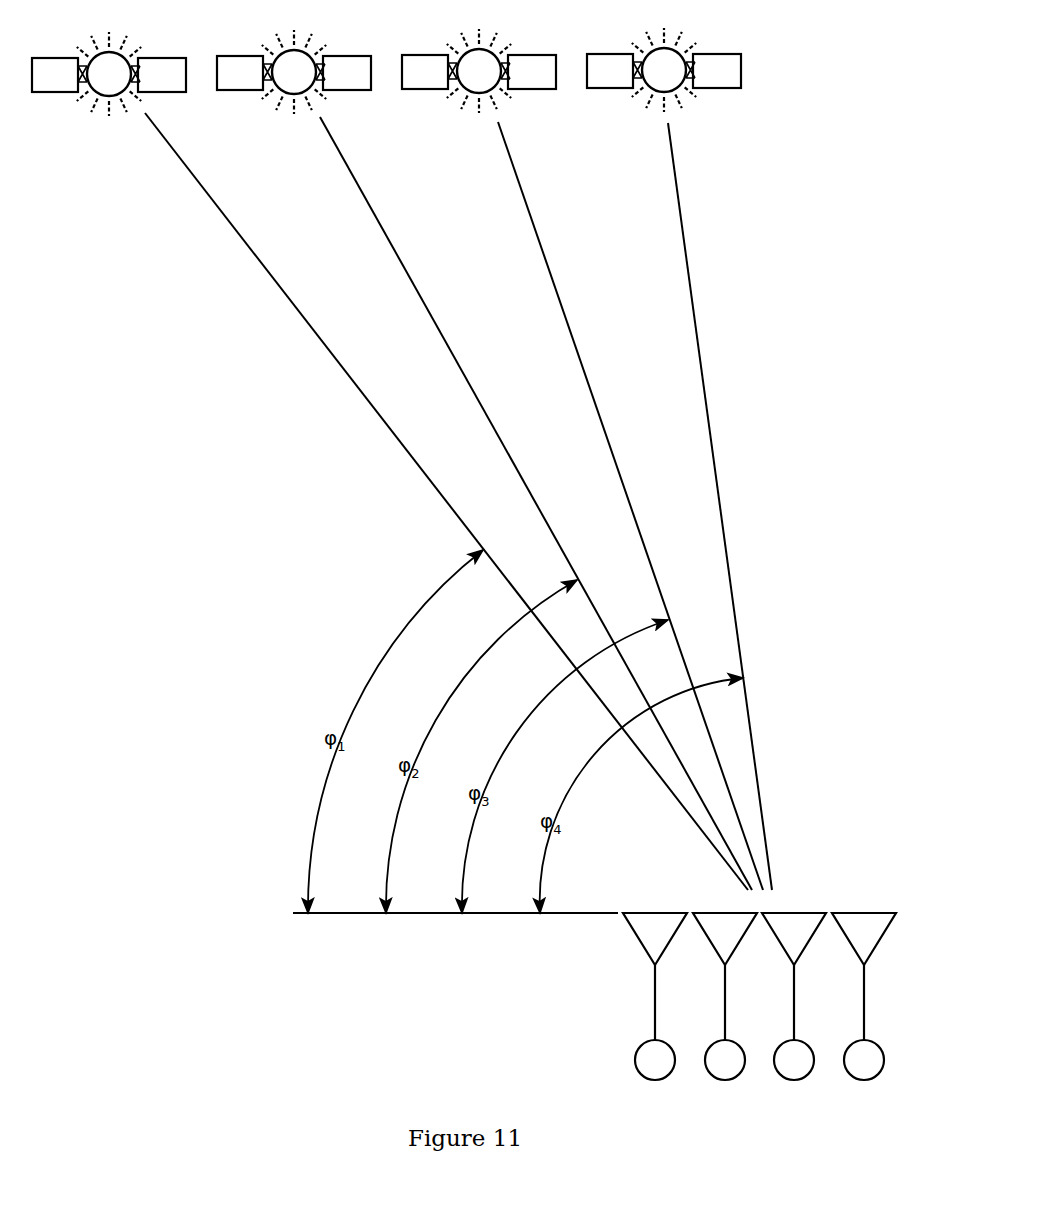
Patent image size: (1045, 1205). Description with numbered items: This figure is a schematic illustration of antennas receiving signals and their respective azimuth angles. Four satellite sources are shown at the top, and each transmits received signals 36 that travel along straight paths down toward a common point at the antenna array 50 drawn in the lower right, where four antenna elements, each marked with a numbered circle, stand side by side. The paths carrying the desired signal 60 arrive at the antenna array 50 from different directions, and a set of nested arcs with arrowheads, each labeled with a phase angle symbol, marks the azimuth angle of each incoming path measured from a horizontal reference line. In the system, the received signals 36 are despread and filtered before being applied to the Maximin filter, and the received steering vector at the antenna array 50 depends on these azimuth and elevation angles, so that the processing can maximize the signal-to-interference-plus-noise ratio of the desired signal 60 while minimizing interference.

The received signals 36 is at (735, 260).
The desired signal 60 is at (362, 420).
The antenna array 50 is at (745, 1140).